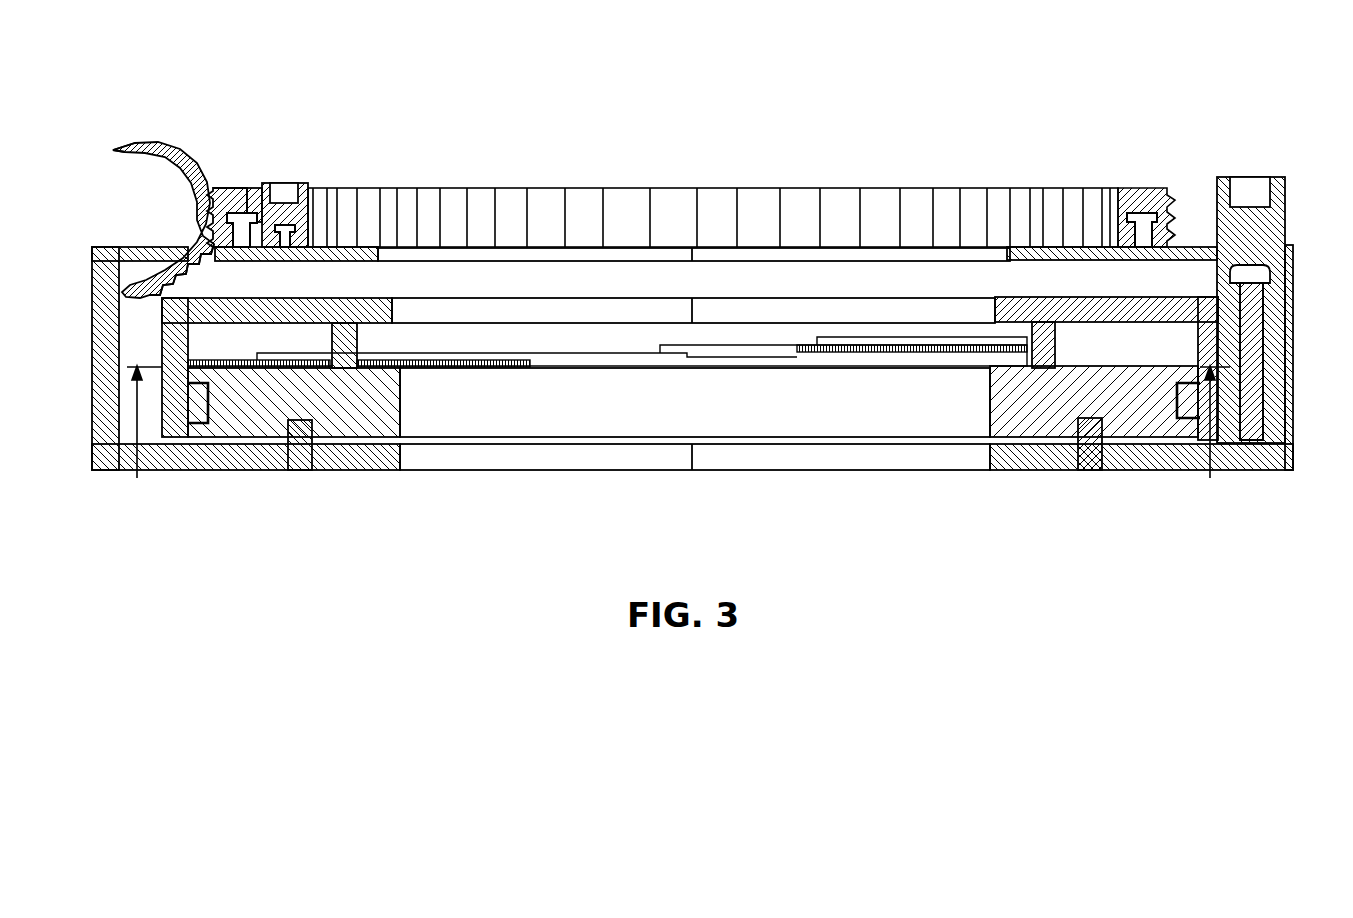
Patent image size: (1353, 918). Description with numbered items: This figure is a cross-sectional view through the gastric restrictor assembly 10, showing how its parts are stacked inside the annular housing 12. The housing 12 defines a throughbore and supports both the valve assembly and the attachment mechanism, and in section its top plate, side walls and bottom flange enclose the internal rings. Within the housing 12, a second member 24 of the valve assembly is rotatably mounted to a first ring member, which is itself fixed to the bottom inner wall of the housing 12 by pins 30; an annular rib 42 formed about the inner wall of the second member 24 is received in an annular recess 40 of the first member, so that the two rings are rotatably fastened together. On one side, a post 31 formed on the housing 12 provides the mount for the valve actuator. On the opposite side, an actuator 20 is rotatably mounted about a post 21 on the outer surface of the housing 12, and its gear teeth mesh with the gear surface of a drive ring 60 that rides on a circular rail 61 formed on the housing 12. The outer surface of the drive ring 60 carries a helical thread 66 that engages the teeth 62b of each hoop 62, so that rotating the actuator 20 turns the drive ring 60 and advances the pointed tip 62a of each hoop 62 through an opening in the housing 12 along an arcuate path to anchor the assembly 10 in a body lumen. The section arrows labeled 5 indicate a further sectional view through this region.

The gastric restrictor assembly 10 is at (826, 62).
The annular housing 12 is at (93, 300).
The actuator 20 is at (305, 184).
The post 21 is at (290, 222).
The second member 24 is at (1040, 297).
The pins 30 is at (298, 470).
The post 31 is at (1253, 390).
The annular recess 40 is at (1197, 425).
The annular rib 42 is at (208, 422).
The drive member or ring 60 is at (219, 188).
The circular rail 61 is at (250, 190).
The helical thread 66 is at (226, 192).
The fastening elements or hoops 62 is at (170, 149).
The tip 62a is at (116, 147).
The teeth or worm gear segments 62b is at (193, 271).
The section line 5- 5 is at (678, 439).